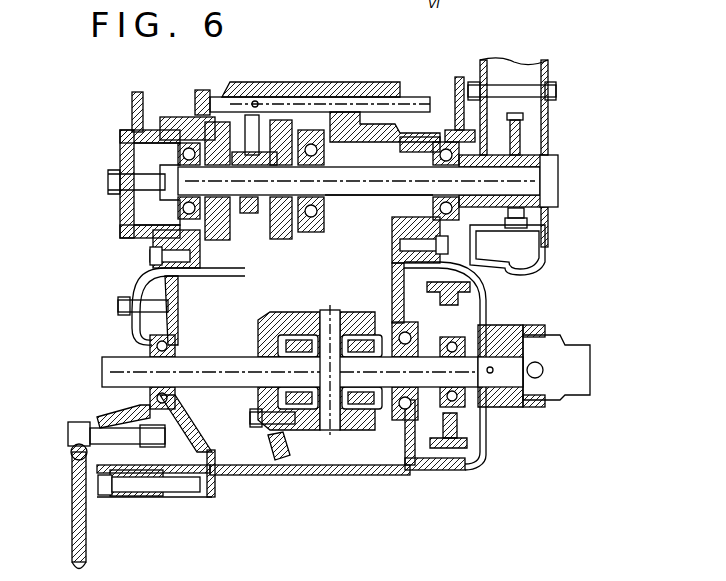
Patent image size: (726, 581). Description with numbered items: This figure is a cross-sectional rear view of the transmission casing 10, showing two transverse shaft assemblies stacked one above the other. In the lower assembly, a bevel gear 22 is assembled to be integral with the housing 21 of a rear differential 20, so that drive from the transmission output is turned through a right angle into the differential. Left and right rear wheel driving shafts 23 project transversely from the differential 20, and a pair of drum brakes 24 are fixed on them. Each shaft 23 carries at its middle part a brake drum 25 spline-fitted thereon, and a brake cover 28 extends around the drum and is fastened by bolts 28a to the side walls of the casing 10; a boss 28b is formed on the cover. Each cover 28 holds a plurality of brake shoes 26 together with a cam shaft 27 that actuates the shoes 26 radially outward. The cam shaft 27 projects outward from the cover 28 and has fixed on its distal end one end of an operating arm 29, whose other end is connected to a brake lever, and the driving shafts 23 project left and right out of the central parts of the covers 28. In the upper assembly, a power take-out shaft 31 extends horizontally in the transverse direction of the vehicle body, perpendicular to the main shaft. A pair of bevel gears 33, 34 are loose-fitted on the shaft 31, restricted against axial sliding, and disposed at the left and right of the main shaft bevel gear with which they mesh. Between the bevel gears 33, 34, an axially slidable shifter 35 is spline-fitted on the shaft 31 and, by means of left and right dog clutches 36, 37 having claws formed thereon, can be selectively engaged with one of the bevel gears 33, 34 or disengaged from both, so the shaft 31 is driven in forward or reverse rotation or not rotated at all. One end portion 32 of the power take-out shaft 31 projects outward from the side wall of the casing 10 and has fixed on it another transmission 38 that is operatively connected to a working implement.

The transmission casing 10 is at (370, 76).
The rear differential 20 is at (338, 436).
The housing 21 is at (310, 428).
The bevel gear 22 is at (280, 462).
The rear wheel driving shafts 23 is at (115, 368).
The drum brakes 24 is at (201, 456).
The brake drums 25 is at (178, 308).
The brake shoes 26 is at (462, 298).
The cam shaft 27 is at (120, 474).
The brake covers 28 is at (125, 308).
The bolts 28a is at (146, 496).
The cover boss 28b is at (450, 248).
The operating arm 29 is at (73, 500).
The power take-out shaft 31 is at (370, 192).
The one end portion 32 is at (547, 178).
The bevel gear 33 is at (214, 240).
The bevel gear 34 is at (283, 125).
The shifter 35 is at (248, 214).
The dog clutch 36 is at (230, 135).
The dog clutch 37 is at (254, 115).
The transmission 38 is at (553, 106).